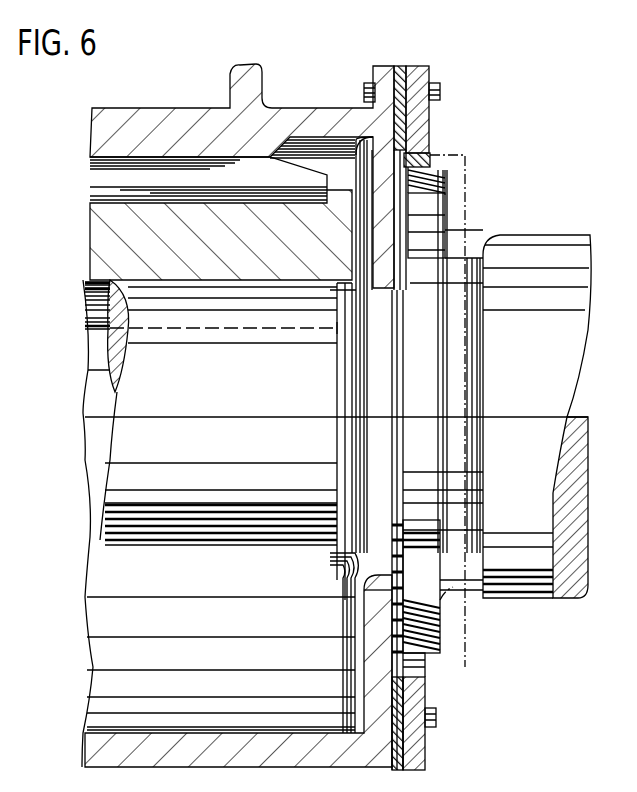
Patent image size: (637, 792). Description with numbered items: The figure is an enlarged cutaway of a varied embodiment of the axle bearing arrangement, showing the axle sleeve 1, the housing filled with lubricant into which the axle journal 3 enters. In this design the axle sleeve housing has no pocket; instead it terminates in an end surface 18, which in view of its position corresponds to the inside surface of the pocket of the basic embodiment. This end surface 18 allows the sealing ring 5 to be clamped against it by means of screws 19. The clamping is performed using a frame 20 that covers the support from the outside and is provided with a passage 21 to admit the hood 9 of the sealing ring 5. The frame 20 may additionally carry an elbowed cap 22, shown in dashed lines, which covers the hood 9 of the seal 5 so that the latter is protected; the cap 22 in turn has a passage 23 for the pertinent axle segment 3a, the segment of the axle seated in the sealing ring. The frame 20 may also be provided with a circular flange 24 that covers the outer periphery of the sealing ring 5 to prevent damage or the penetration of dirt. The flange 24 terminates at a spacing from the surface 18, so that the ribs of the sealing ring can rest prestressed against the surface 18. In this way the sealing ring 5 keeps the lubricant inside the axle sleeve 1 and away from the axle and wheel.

The axle sleeve 1 is at (160, 106).
The axle journal 3 is at (127, 482).
The axle segment 3a is at (387, 462).
The sealing ring 5 is at (434, 230).
The hood 9 is at (443, 183).
The end surface 18 is at (376, 128).
The screws 19 is at (435, 90).
The frame 20 is at (430, 122).
The passage 21 is at (428, 160).
The elbowed cap 22 is at (430, 680).
The passage 23 is at (453, 587).
The circular flange 24 is at (400, 66).